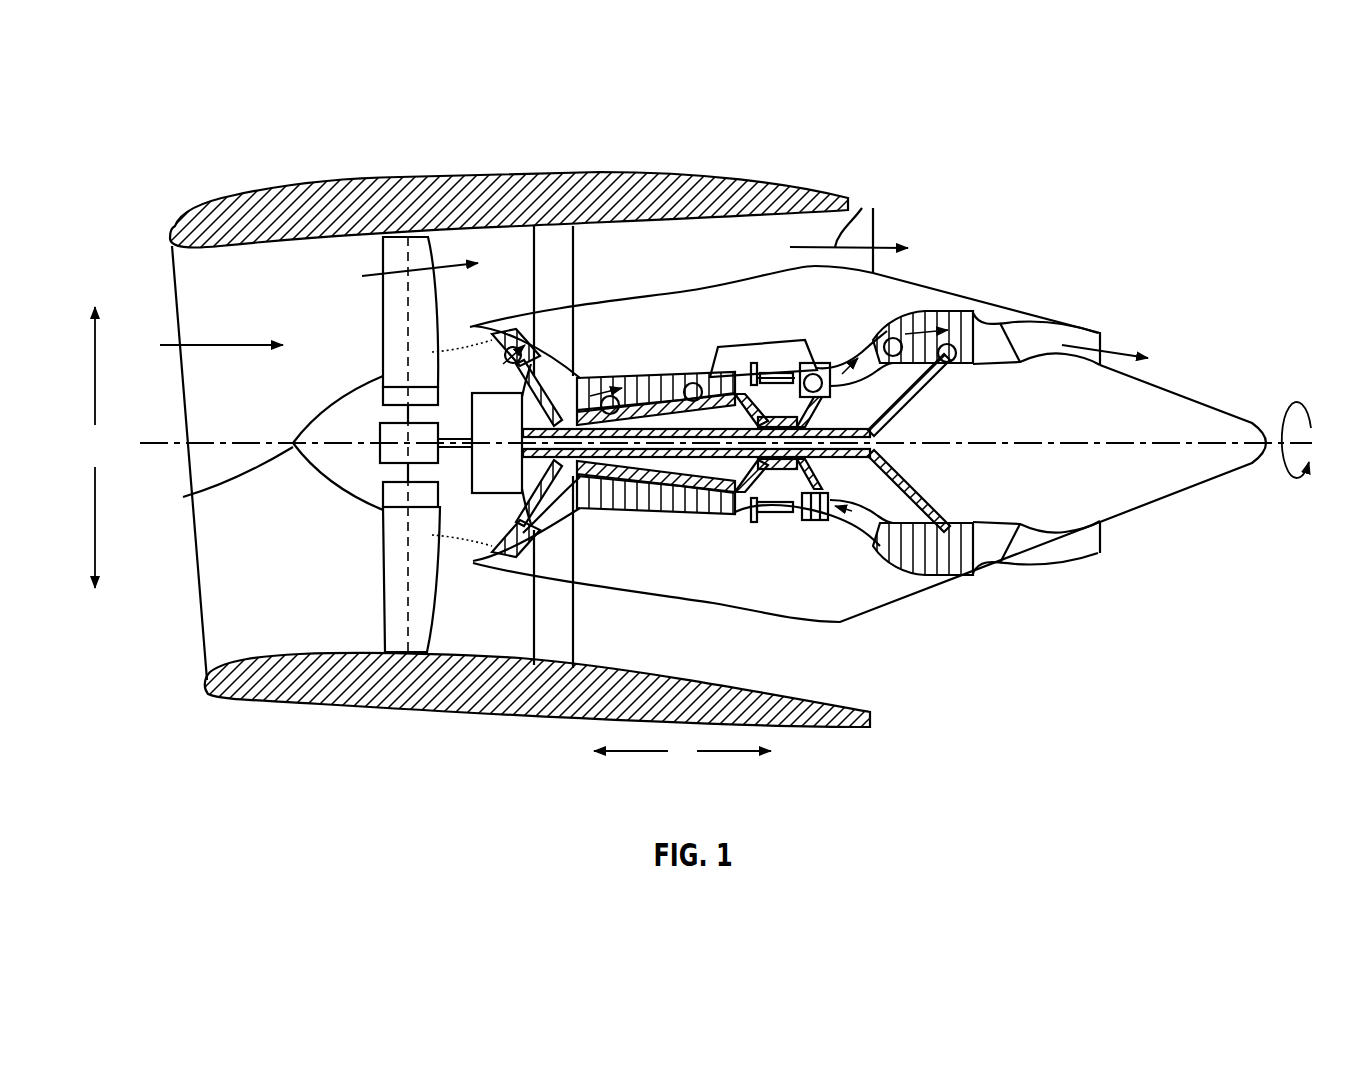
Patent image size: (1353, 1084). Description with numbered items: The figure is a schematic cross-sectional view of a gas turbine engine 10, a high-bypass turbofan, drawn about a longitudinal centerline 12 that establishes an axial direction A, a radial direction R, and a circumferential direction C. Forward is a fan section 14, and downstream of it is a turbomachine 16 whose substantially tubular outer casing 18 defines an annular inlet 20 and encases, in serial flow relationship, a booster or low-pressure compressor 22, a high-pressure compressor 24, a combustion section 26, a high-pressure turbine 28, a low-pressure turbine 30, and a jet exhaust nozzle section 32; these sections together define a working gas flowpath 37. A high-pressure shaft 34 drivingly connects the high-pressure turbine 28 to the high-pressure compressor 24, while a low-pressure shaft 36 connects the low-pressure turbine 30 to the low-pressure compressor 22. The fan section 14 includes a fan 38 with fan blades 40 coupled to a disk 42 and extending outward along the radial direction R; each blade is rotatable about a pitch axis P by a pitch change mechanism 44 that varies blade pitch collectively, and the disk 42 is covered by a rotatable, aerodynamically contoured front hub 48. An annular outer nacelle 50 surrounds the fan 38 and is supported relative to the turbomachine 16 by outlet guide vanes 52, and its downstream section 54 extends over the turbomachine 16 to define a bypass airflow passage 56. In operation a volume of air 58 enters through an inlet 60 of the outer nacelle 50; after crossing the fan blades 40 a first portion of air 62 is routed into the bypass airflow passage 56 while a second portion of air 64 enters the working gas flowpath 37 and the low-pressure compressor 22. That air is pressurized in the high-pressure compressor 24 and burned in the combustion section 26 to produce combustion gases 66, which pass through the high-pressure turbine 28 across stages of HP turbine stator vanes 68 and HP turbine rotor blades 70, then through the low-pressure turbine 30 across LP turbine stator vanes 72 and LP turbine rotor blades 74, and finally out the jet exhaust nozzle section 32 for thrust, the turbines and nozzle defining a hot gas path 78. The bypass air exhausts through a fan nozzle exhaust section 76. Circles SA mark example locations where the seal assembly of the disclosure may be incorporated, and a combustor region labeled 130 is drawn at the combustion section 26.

The gas turbine engine 10 is at (1018, 187).
The longitudinal centerline 12 is at (1040, 443).
The fan section 14 is at (342, 256).
The turbomachine 16 is at (676, 324).
The outer casing 18 is at (717, 605).
The annular inlet 20 is at (485, 551).
The low-pressure compressor 22 is at (532, 526).
The high-pressure compressor 24 is at (603, 507).
The combustion section 26 is at (771, 511).
The high-pressure turbine 28 is at (852, 508).
The low-pressure turbine 30 is at (949, 578).
The jet exhaust nozzle section 32 is at (1011, 568).
The high-pressure shaft 34 is at (797, 410).
The low-pressure shaft 36 is at (872, 420).
The working gas flowpath 37 is at (561, 503).
The fan 38 is at (343, 497).
The fan blades 40 is at (383, 578).
The disk 42 is at (398, 402).
The pitch change mechanism 44 is at (378, 423).
The front hub 48 is at (268, 444).
The outer nacelle 50 is at (430, 722).
The outlet guide vanes 52 is at (573, 266).
The downstream section 54 is at (820, 196).
The bypass airflow passage 56 is at (735, 252).
The volume of air 58 is at (223, 340).
The inlet 60 is at (205, 665).
The first portion of air 62 is at (395, 290).
The second portion of air 64 is at (465, 333).
The combustion gases 66 is at (918, 322).
The HP turbine stator vanes 68 is at (790, 517).
The HP turbine rotor blades 70 is at (805, 520).
The LP turbine stator vanes 72 is at (880, 555).
The LP turbine rotor blades 74 is at (890, 560).
The fan nozzle exhaust section 76 is at (868, 232).
The hot gas path 78 is at (860, 349).
The combustor 130 is at (765, 346).
The pitch axis P is at (410, 250).
The radial direction R is at (94, 447).
The axial direction A is at (682, 753).
The circumferential direction C is at (1296, 458).
The circles SA is at (530, 350).